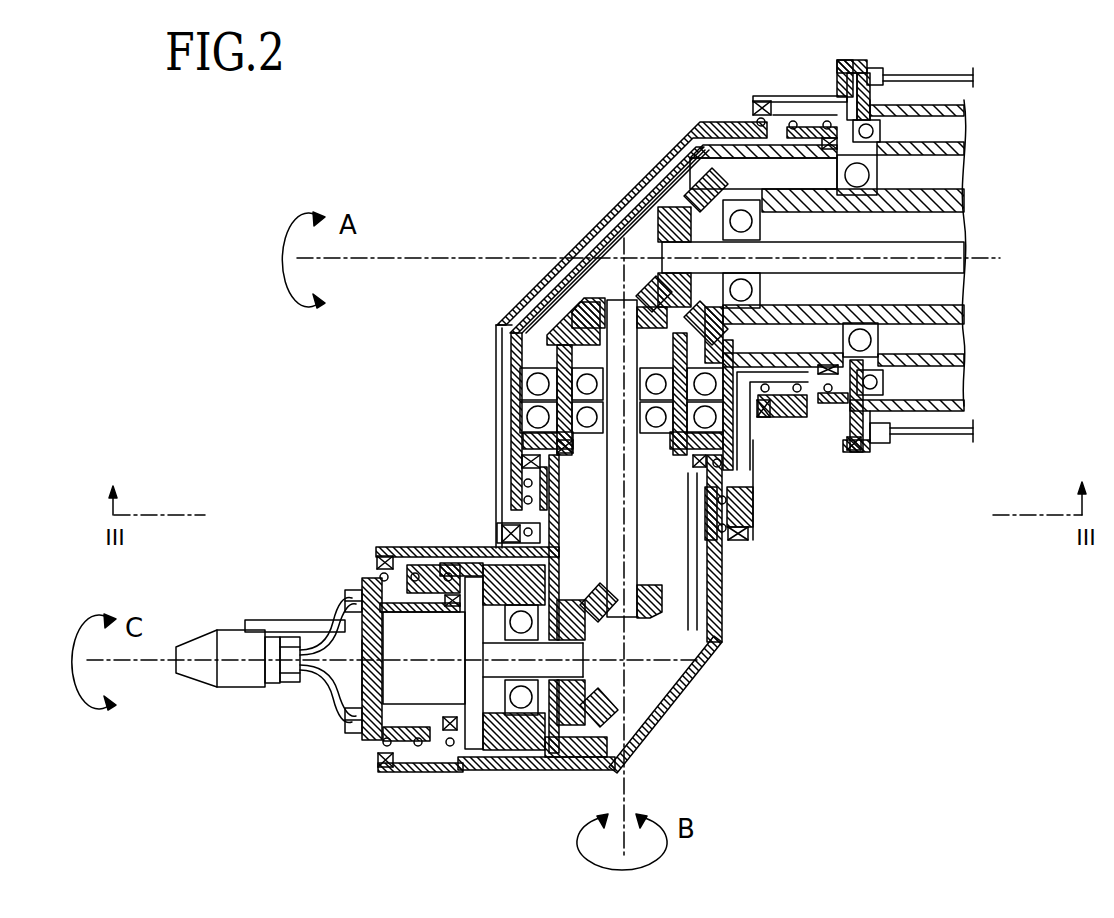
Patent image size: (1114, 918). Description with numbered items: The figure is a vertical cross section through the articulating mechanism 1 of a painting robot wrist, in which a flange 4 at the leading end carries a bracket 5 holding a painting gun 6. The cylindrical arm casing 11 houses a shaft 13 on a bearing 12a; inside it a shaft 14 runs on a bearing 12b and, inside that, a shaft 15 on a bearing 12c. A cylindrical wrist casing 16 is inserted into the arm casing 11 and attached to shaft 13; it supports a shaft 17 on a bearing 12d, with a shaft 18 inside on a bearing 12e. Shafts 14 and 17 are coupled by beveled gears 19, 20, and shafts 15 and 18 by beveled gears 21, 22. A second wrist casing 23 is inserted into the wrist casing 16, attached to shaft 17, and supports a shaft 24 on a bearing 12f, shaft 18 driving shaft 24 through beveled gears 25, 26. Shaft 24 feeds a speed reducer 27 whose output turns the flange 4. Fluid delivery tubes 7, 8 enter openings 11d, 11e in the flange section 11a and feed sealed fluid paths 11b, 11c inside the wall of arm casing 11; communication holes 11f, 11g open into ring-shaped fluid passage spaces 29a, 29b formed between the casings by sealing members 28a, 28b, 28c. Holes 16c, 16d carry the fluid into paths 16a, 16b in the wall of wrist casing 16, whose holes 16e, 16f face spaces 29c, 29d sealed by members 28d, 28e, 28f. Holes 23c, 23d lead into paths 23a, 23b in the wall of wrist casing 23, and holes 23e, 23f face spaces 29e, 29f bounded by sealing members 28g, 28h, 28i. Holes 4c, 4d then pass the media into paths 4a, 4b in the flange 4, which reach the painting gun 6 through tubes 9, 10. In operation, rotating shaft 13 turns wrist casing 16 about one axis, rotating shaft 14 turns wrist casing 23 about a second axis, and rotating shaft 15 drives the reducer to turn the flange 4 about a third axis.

The articulating mechanism 1 is at (392, 80).
The flange 4 is at (395, 688).
The fluid path 4a is at (350, 593).
The fluid path 4b is at (352, 733).
The fluid communication hole 4c is at (372, 575).
The fluid communication hole 4d is at (455, 757).
The bracket 5 is at (250, 622).
The painting gun 6 is at (200, 675).
The fluid delivery tube 7 is at (967, 80).
The fluid delivery tube 8 is at (975, 430).
The tube 9 is at (335, 605).
The tube 10 is at (290, 682).
The arm casing 11 is at (950, 403).
The flange section 11a is at (872, 105).
The fluid path 11b is at (846, 62).
The fluid path 11c is at (856, 452).
The opening 11d is at (862, 98).
The opening 11e is at (870, 448).
The fluid communication hole 11f is at (772, 96).
The fluid communication hole 11g is at (850, 452).
The bearing 12a is at (885, 130).
The bearing 12b is at (880, 340).
The bearing 12c is at (760, 290).
The bearing 12d is at (530, 382).
The bearing 12e is at (545, 402).
The bearing 12f is at (523, 710).
The shaft 13 is at (966, 160).
The shaft 14 is at (950, 200).
The shaft 15 is at (940, 250).
The wrist casing 16 is at (585, 236).
The fluid path 16a is at (615, 226).
The fluid path 16b is at (770, 366).
The fluid communication hole 16c is at (752, 107).
The fluid communication hole 16d is at (887, 410).
The fluid communication hole 16e is at (515, 530).
The fluid communication hole 16f is at (742, 495).
The shaft 17 is at (515, 420).
The shaft 18 is at (545, 318).
The beveled gear 19 is at (700, 128).
The beveled gear 20 is at (499, 324).
The beveled gear 21 is at (663, 200).
The beveled gear 22 is at (600, 348).
The wrist casing 23 is at (705, 690).
The fluid path 23a is at (530, 550).
The fluid path 23b is at (640, 752).
The fluid communication hole 23c is at (497, 495).
The fluid communication hole 23d is at (716, 472).
The fluid communication hole 23e is at (390, 558).
The fluid communication hole 23f is at (430, 772).
The shaft 24 is at (590, 652).
The beveled gear 25 is at (727, 545).
The beveled gear 26 is at (596, 710).
The speed reducer 27 is at (360, 722).
The sealing member 28a is at (757, 118).
The sealing member 28b is at (815, 398).
The sealing member 28c is at (810, 120).
The sealing member 28d is at (705, 575).
The sealing member 28e is at (720, 500).
The sealing member 28f is at (530, 465).
The sealing member 28g is at (385, 760).
The sealing member 28h is at (420, 757).
The sealing member 28i is at (430, 565).
The fluid passage space 29a is at (782, 418).
The fluid passage space 29b is at (800, 112).
The fluid passage space 29c is at (733, 530).
The fluid passage space 29d is at (535, 490).
The fluid passage space 29e is at (400, 757).
The fluid passage space 29f is at (392, 565).